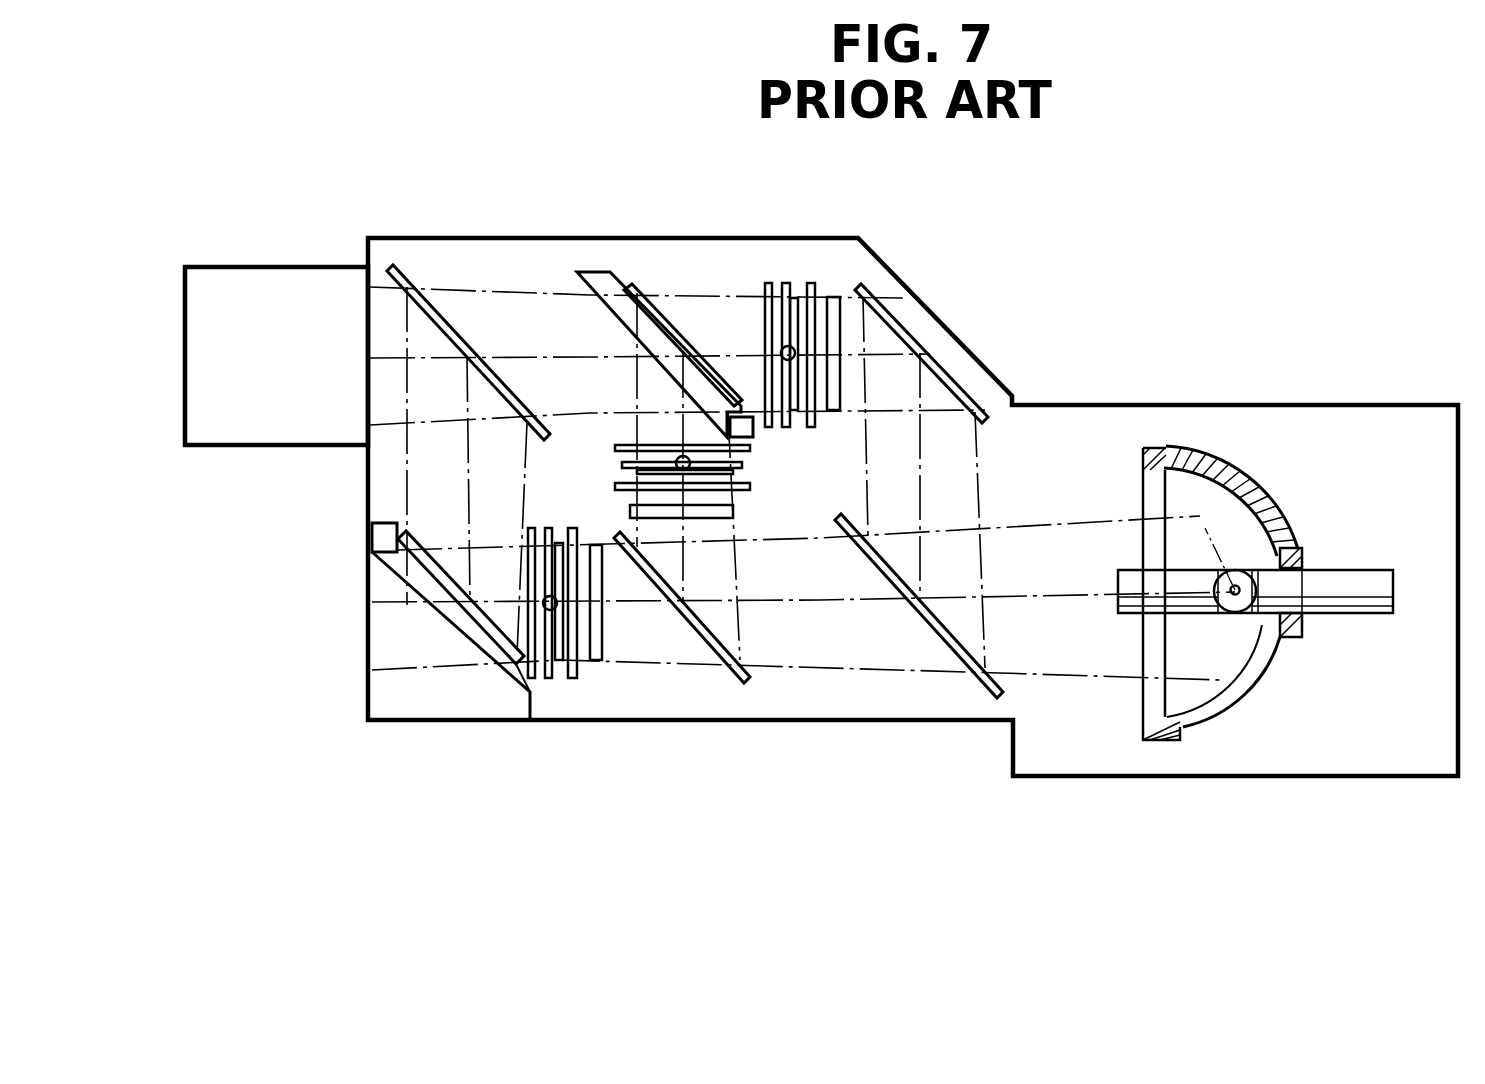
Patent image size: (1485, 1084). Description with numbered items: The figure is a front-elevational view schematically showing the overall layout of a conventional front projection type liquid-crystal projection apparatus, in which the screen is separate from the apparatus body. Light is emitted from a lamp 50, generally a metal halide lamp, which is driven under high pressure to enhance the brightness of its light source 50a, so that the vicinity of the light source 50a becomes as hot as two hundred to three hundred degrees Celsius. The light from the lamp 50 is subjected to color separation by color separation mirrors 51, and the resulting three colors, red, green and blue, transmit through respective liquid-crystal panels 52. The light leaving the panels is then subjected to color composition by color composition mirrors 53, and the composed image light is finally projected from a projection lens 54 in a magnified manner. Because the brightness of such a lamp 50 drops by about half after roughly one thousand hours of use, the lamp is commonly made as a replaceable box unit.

The lamp 50 is at (1255, 550).
The light source 50a is at (1237, 617).
The color separation mirrors 51 is at (960, 380).
The liquid-crystal panels 52 is at (793, 307).
The color composition mirrors 53 is at (443, 317).
The projection lens 54 is at (293, 290).